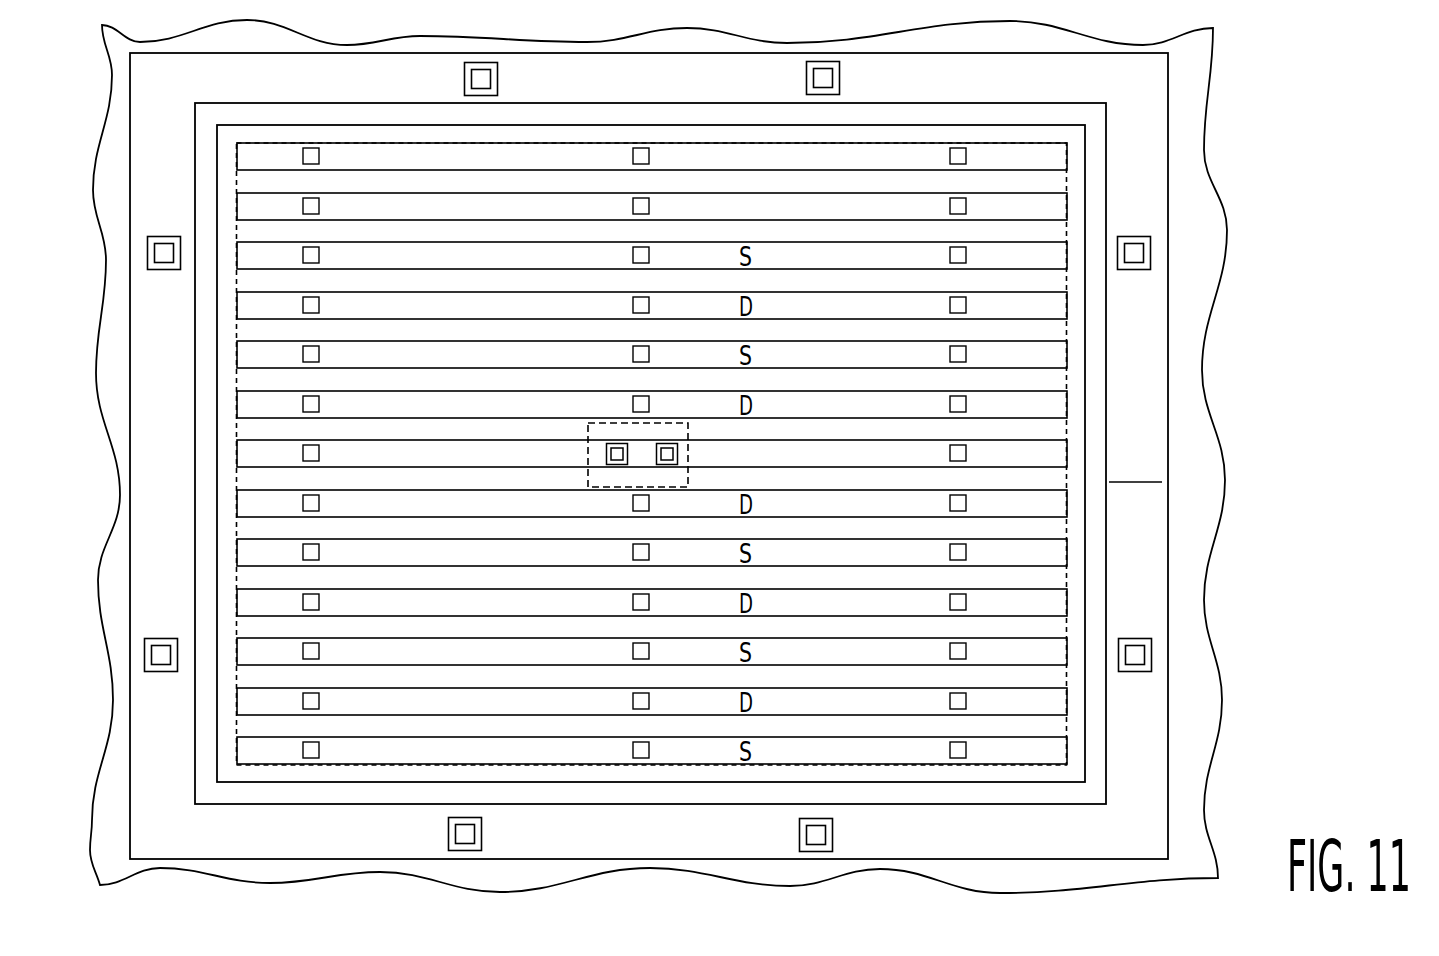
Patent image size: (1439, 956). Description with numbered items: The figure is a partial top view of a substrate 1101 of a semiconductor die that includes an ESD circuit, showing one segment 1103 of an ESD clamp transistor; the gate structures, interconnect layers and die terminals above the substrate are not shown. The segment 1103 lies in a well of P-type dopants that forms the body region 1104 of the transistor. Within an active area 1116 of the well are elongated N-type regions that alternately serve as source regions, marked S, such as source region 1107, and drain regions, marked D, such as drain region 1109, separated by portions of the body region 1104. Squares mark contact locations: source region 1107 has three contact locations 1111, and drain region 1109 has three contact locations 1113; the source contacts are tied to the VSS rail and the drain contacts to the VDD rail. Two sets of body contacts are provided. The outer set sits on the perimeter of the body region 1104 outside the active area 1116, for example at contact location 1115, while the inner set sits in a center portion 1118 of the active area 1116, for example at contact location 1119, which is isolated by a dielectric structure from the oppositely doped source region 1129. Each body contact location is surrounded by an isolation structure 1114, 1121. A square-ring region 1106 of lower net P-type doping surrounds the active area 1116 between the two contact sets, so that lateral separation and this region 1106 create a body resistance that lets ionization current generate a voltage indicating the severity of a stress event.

The substrate 1101 is at (1187, 78).
The segment 1103 is at (1149, 625).
The body region 1104 is at (1075, 409).
The region 1106 is at (206, 167).
The source region 1107 is at (753, 157).
The drain region 1109 is at (757, 207).
The contact location 1111 is at (641, 147).
The contact location 1113 is at (650, 205).
The isolation structure 1114 is at (162, 672).
The contact location 1115 is at (162, 641).
The active area 1116 is at (1069, 730).
The center portion 1118 is at (688, 462).
The contact location 1119 is at (660, 448).
The isolation structure 1121 is at (678, 452).
The source region 1129 is at (762, 455).